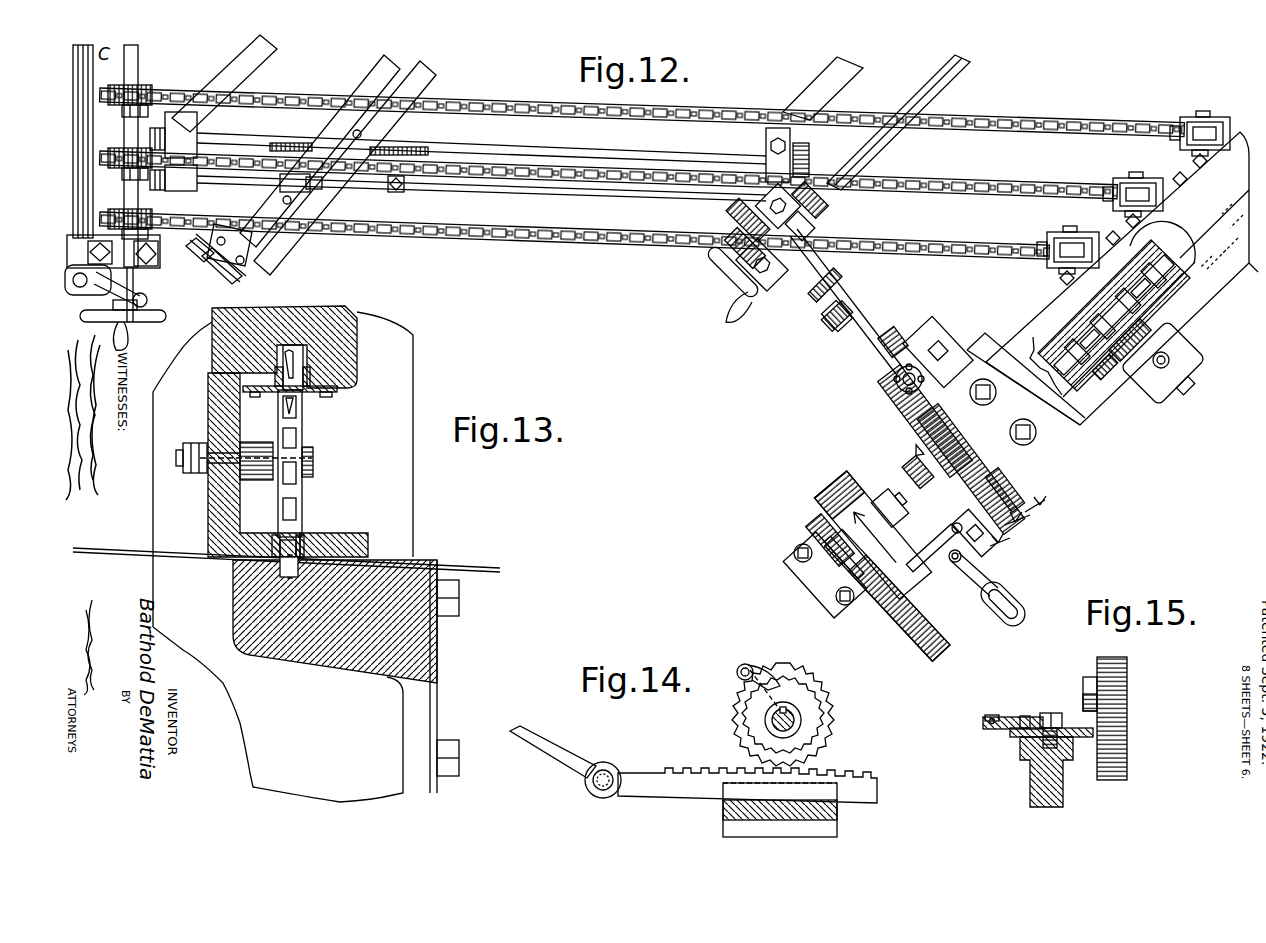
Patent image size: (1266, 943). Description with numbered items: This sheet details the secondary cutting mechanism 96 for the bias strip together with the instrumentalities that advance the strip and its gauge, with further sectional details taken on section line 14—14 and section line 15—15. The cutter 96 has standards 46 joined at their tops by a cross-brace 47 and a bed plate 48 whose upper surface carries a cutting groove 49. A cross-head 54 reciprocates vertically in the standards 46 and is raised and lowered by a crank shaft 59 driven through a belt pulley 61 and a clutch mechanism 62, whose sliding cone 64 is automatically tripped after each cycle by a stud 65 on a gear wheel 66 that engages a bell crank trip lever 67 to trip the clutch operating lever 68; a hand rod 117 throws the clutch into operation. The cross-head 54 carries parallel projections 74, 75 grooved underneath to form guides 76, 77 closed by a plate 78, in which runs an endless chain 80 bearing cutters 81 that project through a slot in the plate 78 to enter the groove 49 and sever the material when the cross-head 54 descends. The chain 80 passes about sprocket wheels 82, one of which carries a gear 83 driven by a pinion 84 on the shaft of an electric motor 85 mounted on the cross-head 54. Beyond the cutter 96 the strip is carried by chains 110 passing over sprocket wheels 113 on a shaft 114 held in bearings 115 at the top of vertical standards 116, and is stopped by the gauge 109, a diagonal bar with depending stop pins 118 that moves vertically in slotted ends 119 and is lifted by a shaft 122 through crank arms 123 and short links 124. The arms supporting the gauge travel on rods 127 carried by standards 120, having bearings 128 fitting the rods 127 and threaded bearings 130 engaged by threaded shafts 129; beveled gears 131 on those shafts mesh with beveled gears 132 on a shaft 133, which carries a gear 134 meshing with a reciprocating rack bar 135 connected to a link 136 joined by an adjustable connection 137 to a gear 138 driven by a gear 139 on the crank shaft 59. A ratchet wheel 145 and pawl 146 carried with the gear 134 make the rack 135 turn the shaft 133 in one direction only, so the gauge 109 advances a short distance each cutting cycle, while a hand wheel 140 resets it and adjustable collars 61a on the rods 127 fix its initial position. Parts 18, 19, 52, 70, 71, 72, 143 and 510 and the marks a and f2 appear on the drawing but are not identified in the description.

In FIG. 12, the section line 14— 14 is at (708, 212).
In FIG. 12, the section line 15— 15 is at (950, 536).
In FIG. 13, the pivot stud 18 is at (300, 570).
In FIG. 12, the rack bar 19 is at (884, 324).
In FIG. 12, the standards 46 is at (1060, 450).
In FIG. 13, the standards 46 is at (405, 395).
In FIG. 12, the cross-brace 47 is at (1018, 327).
In FIG. 13, the bed plate 48 is at (437, 648).
In FIG. 12, the cutting groove 49 is at (1165, 248).
In FIG. 13, the cutting groove 49 is at (270, 574).
In FIG. 12, the bearing block 52 is at (1062, 300).
In FIG. 13, the cross-head 54 is at (358, 312).
In FIG. 12, the crank shaft 59 is at (1023, 420).
In FIG. 12, the belt pulley 61 is at (832, 488).
In FIG. 12, the adjustable collars 61a is at (404, 192).
In FIG. 12, the clutch mechanism 62 is at (880, 492).
In FIG. 12, the sliding cone 64 is at (905, 470).
In FIG. 12, the stud 65 is at (1005, 486).
In FIG. 15, the stud 65 is at (1095, 678).
In FIG. 12, the gear wheel 66 is at (888, 405).
In FIG. 15, the gear wheel 66 is at (1128, 702).
In FIG. 12, the bell crank trip lever 67 is at (958, 572).
In FIG. 15, the bell crank trip lever 67 is at (1097, 740).
In FIG. 12, the clutch operating lever 68 is at (945, 565).
In FIG. 15, the clutch operating lever 68 is at (1008, 720).
In FIG. 12, the bracket 70 is at (800, 530).
In FIG. 12, the toothed rack 71 is at (918, 620).
In FIG. 12, the guide 72 is at (1005, 488).
In FIG. 13, the projection 74 is at (340, 540).
In FIG. 13, the projection 75 is at (352, 385).
In FIG. 13, the guide 76 is at (270, 540).
In FIG. 13, the guide 77 is at (270, 380).
In FIG. 13, the plate 78 is at (338, 395).
In FIG. 12, the endless chain 80 is at (1148, 290).
In FIG. 13, the endless chain 80 is at (305, 372).
In FIG. 13, the cutters 81 is at (300, 360).
In FIG. 12, the sprocket wheels 82 is at (1095, 305).
In FIG. 13, the sprocket wheels 82 is at (302, 430).
In FIG. 12, the gear 83 is at (1103, 375).
In FIG. 12, the pinion 84 is at (1138, 318).
In FIG. 12, the electric motor 85 is at (1160, 392).
In FIG. 12, the second cutter 96 is at (1198, 300).
In FIG. 12, the gauge 109 is at (438, 78).
In FIG. 12, the chains 110 is at (612, 240).
In FIG. 12, the sprocket wheels 113 is at (140, 92).
In FIG. 12, the shaft 114 is at (140, 58).
In FIG. 12, the bearings 115 is at (128, 270).
In FIG. 12, the vertical standards 116 is at (365, 135).
In FIG. 12, the hand rod 117 is at (995, 625).
In FIG. 15, the hand rod 117 is at (983, 720).
In FIG. 12, the stop pins 118 is at (296, 203).
In FIG. 12, the slotted ends 119 is at (248, 258).
In FIG. 12, the standards 120 is at (198, 118).
In FIG. 12, the shaft 122 is at (360, 90).
In FIG. 12, the crank arms 123 is at (210, 266).
In FIG. 12, the short links 124 is at (236, 278).
In FIG. 12, the rods 127 is at (520, 200).
In FIG. 12, the bearings 128 is at (330, 192).
In FIG. 12, the threaded shafts 129 is at (548, 156).
In FIG. 12, the threaded bearings 130 is at (318, 142).
In FIG. 12, the beveled gears 131 is at (810, 158).
In FIG. 12, the beveled gears 132 is at (832, 210).
In FIG. 12, the shaft 133 is at (866, 156).
In FIG. 14, the shaft 133 is at (802, 722).
In FIG. 12, the gear 134 is at (730, 232).
In FIG. 14, the gear 134 is at (838, 690).
In FIG. 12, the reciprocating rack bar 135 is at (800, 284).
In FIG. 14, the reciprocating rack bar 135 is at (660, 792).
In FIG. 12, the link 136 is at (860, 340).
In FIG. 14, the link 136 is at (543, 747).
In FIG. 12, the adjustable connection 137 is at (762, 190).
In FIG. 12, the gear 138 is at (905, 360).
In FIG. 12, the gear 139 is at (1035, 465).
In FIG. 12, the hand wheel 140 is at (720, 284).
In FIG. 12, the link 143 is at (104, 287).
In FIG. 12, the ratchet wheel 145 is at (775, 268).
In FIG. 14, the ratchet wheel 145 is at (808, 692).
In FIG. 12, the pawl 146 is at (880, 222).
In FIG. 14, the pawl 146 is at (760, 668).
In FIG. 12, the pin 510 is at (982, 192).
In FIG. 13, the rail a is at (286, 559).
In FIG. 13, the plane f2 is at (150, 548).